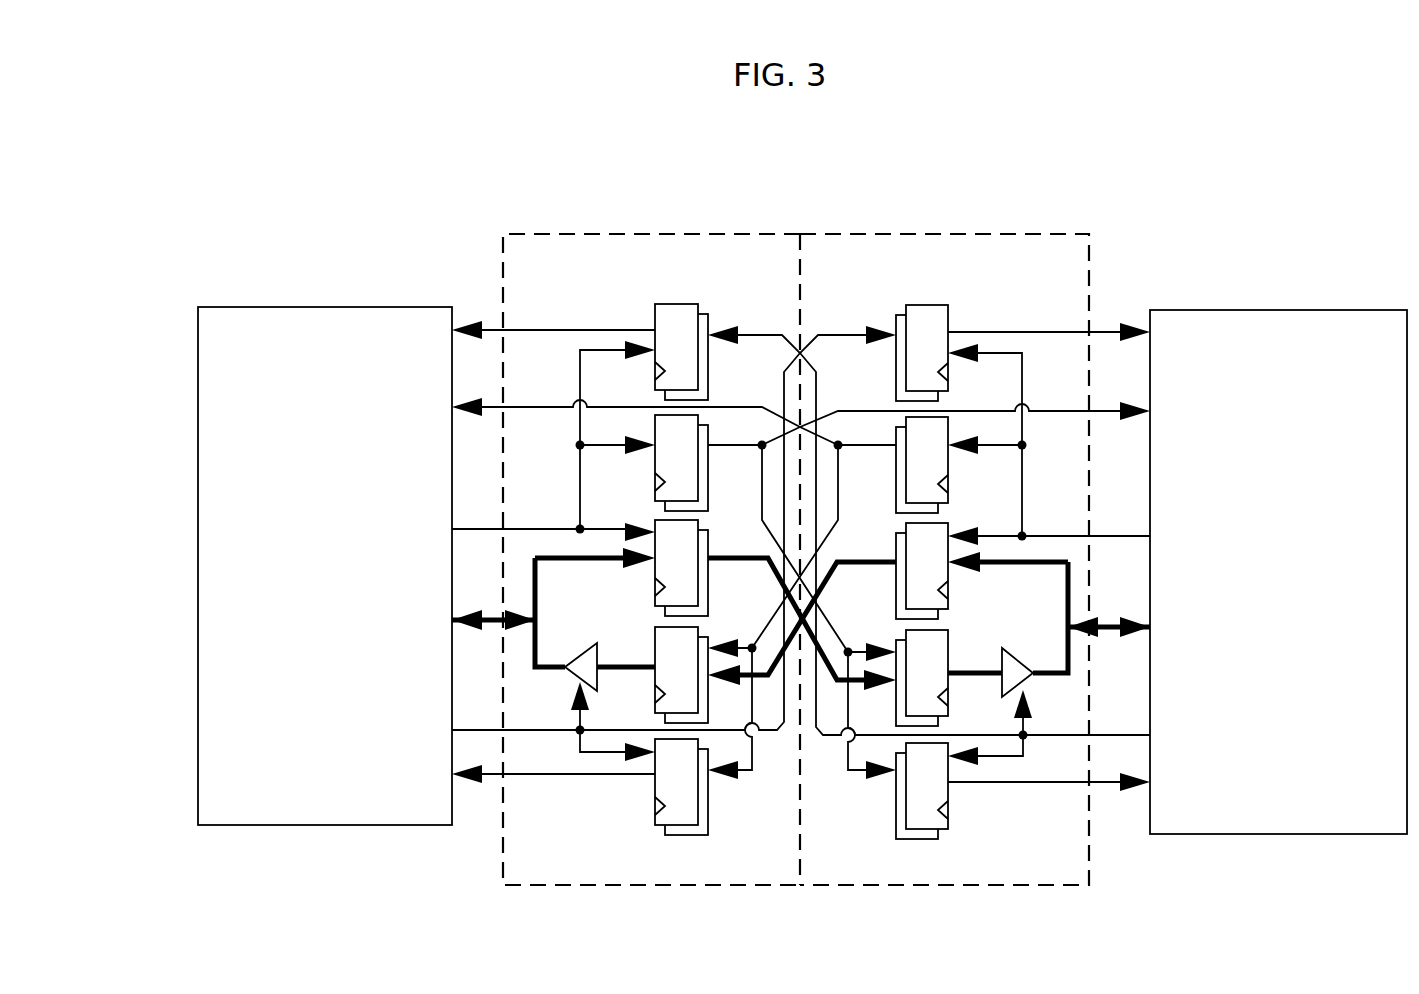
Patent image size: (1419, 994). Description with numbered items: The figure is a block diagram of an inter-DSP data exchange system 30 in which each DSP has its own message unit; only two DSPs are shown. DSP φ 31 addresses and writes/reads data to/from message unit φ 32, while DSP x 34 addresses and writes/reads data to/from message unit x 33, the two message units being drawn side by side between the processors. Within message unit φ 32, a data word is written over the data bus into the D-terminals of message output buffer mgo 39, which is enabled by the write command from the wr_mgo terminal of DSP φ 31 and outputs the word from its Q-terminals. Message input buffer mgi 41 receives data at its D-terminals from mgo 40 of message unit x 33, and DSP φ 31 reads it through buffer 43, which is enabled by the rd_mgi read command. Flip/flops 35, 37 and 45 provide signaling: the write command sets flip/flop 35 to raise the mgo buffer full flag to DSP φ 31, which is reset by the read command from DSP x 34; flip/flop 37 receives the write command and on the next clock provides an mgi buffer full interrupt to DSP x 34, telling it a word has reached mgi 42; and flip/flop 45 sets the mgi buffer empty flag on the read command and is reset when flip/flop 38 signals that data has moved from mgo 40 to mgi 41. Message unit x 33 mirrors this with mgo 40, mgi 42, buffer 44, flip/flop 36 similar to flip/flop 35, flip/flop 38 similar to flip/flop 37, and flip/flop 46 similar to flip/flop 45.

The inter-DSP data exchange system 30 is at (557, 129).
The DSP φ 31 is at (240, 307).
The message unit φ 32 is at (550, 234).
The message unit x 33 is at (930, 234).
The DSP x 34 is at (1292, 310).
The flip/flop 35 is at (653, 315).
The flip/flop 36 is at (932, 305).
The flip/flop 37 is at (710, 458).
The flip/flop 38 is at (952, 467).
The message output buffer (mgo) 39 is at (708, 575).
The message output buffer (mgo) 40 is at (955, 580).
The message input buffer (mgi) 41 is at (655, 645).
The message input buffer (mgi) 42 is at (948, 645).
The buffer 43 is at (578, 655).
The buffer 44 is at (1028, 680).
The flip/flop 45 is at (712, 808).
The flip/flop 46 is at (952, 805).